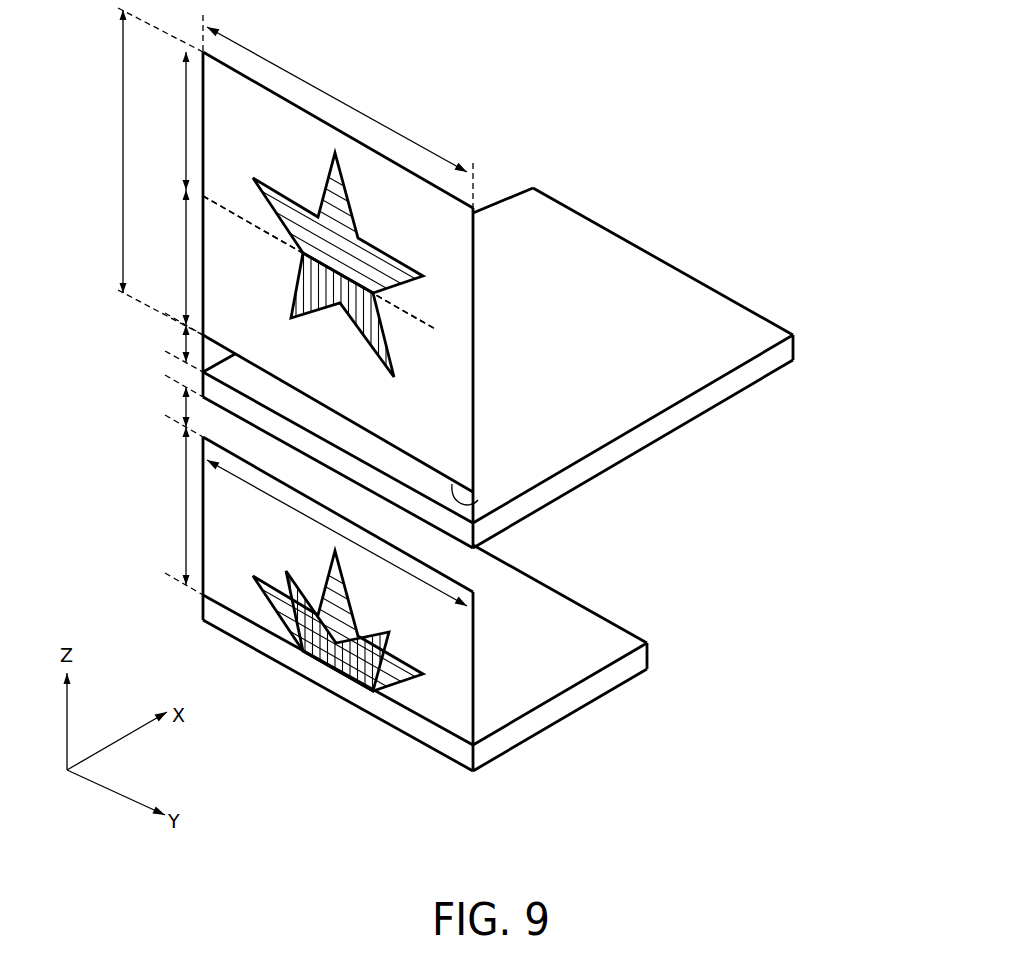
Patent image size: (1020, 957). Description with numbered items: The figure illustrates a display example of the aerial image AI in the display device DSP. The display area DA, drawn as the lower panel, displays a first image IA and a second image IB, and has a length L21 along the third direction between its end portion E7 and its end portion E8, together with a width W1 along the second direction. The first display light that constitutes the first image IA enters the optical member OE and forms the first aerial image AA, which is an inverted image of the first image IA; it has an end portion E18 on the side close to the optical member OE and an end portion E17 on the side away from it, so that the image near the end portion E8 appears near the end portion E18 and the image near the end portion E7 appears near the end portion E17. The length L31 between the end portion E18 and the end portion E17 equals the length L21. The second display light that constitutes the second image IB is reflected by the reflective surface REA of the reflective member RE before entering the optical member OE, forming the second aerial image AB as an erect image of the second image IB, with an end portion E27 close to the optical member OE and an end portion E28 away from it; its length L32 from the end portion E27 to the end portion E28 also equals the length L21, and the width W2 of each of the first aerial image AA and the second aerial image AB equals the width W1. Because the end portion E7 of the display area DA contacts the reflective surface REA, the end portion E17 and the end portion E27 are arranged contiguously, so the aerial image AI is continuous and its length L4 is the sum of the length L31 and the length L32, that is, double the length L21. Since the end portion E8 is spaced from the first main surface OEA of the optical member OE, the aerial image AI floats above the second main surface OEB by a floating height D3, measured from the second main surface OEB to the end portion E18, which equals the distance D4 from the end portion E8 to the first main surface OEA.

The display device DSP is at (476, 408).
The optical member OE is at (514, 368).
The second main surface OEB is at (682, 308).
The first main surface OEA is at (723, 407).
The reflective member RE is at (431, 675).
The reflective surface REA is at (540, 618).
The display area DA is at (338, 606).
The first image IA is at (393, 637).
The second image IB is at (408, 683).
The aerial image AI is at (410, 272).
The second aerial image AB is at (462, 288).
The first aerial image AA is at (462, 403).
The end portion E7 is at (443, 733).
The end portion E8 is at (455, 580).
The end portion E17 is at (455, 345).
The end portion E18 is at (478, 500).
The end portion E27 is at (432, 328).
The end portion E28 is at (430, 181).
The width W1 is at (235, 478).
The width W2 is at (338, 111).
The length L4 is at (148, 171).
The length L31 is at (174, 262).
The length L32 is at (167, 121).
The length L21 is at (174, 511).
The floating height D3 is at (175, 348).
The distance D4 is at (175, 406).